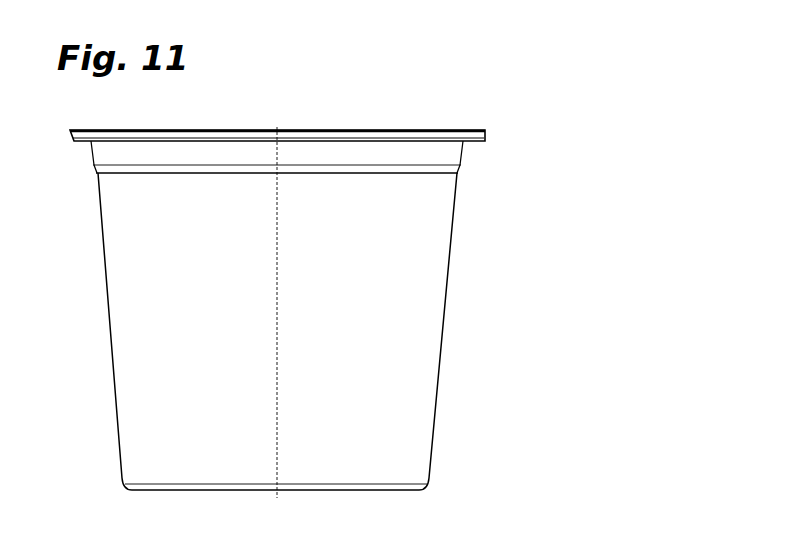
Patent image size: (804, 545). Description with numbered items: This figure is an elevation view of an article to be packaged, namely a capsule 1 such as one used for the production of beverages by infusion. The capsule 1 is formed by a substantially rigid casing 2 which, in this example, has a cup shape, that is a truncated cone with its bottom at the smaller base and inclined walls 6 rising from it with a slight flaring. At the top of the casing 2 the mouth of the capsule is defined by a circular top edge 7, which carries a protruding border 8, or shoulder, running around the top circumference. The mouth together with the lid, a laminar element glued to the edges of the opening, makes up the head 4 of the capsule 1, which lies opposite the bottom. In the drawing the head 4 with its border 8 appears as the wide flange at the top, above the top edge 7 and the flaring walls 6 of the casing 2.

The capsule 1 is at (372, 272).
The casing 2 is at (319, 331).
The head 4 is at (345, 130).
The inclined walls 6 is at (449, 263).
The circular top edge 7 is at (463, 161).
The protruding border 8 is at (470, 141).